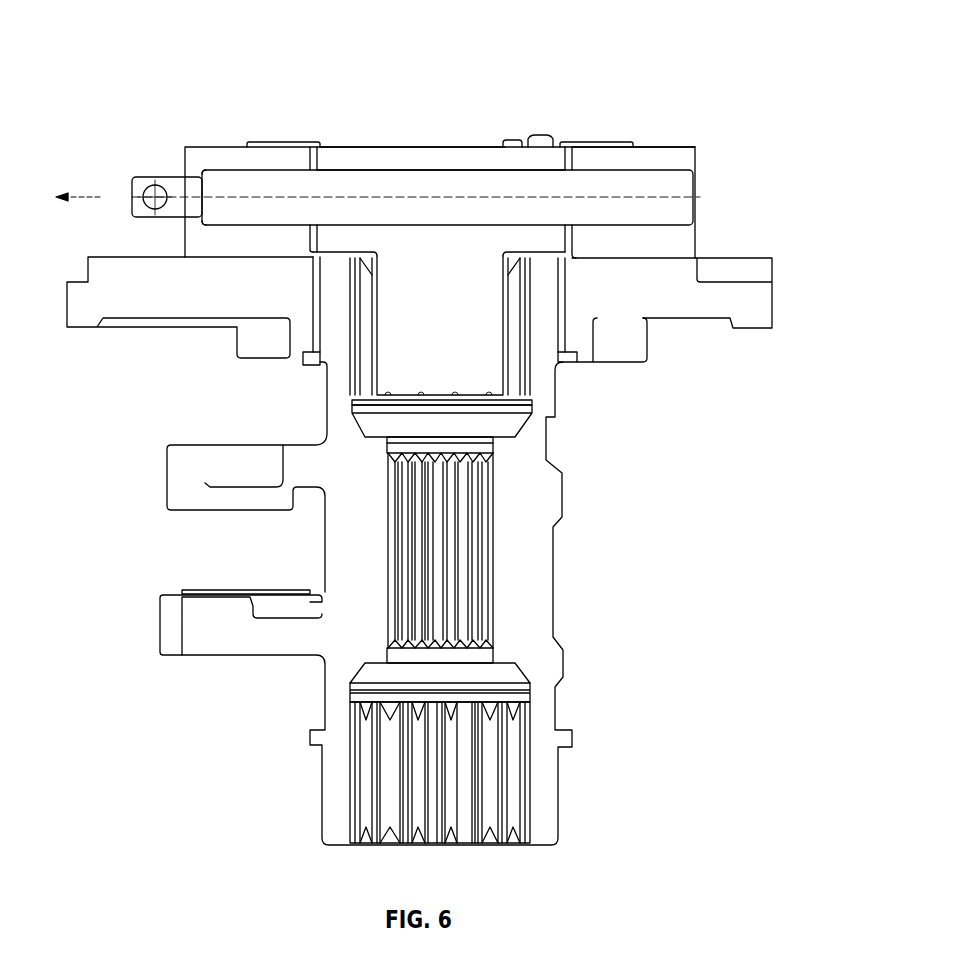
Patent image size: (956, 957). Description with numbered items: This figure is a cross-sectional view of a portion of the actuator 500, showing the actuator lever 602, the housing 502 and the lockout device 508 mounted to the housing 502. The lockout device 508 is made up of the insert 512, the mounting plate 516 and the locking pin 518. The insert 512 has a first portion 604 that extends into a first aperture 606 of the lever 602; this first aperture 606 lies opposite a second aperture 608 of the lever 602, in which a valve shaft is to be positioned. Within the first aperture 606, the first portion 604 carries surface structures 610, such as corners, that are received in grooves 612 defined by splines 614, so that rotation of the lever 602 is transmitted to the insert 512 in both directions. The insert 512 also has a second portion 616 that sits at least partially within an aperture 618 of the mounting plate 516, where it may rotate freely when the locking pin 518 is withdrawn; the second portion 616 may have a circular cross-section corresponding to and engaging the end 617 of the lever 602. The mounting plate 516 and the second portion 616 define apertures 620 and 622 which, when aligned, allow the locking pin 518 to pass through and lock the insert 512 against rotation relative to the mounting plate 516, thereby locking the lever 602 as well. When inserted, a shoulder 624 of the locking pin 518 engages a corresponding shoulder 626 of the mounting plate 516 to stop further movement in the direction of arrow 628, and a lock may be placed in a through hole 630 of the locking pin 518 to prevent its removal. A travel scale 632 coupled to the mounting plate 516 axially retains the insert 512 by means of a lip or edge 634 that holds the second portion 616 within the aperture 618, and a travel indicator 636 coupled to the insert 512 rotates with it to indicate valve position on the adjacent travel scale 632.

The actuator 500 is at (678, 52).
The housing 502 is at (752, 270).
The lockout device 508 is at (727, 158).
The insert 512 is at (407, 290).
The mounting plate 516 is at (663, 150).
The locking pin 518 is at (345, 182).
The actuator lever 602 is at (540, 573).
The first portion 604 is at (480, 325).
The first aperture 606 is at (528, 392).
The second aperture 608 is at (510, 803).
The surface structures 610 is at (350, 388).
The grooves 612 is at (353, 348).
The splines 614 is at (530, 353).
The second portion 616 is at (378, 147).
The end of the lever 617 is at (335, 255).
The aperture of the mounting plate 618 is at (573, 243).
The aperture of the mounting plate for locking pin 620 is at (233, 168).
The aperture of the second portion 622 is at (428, 168).
The shoulder of the locking pin 624 is at (205, 218).
The shoulder of the mounting plate 626 is at (203, 172).
The arrow 628 is at (82, 196).
The through hole 630 is at (147, 180).
The travel scale 632 is at (277, 142).
The lip or edge 634 is at (558, 143).
The travel indicator 636 is at (493, 142).